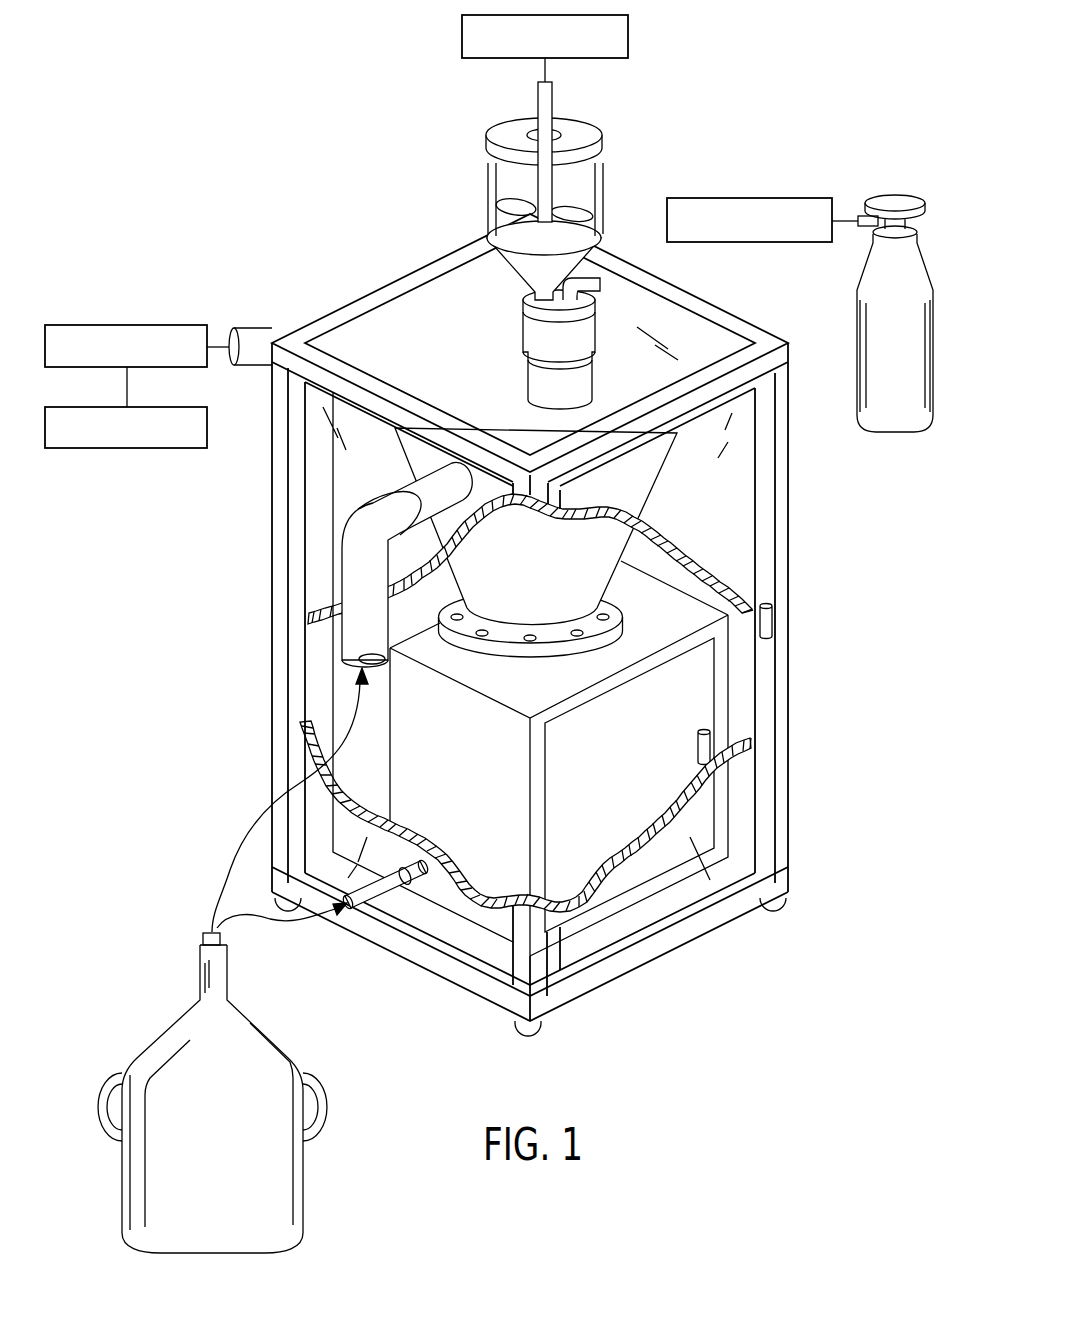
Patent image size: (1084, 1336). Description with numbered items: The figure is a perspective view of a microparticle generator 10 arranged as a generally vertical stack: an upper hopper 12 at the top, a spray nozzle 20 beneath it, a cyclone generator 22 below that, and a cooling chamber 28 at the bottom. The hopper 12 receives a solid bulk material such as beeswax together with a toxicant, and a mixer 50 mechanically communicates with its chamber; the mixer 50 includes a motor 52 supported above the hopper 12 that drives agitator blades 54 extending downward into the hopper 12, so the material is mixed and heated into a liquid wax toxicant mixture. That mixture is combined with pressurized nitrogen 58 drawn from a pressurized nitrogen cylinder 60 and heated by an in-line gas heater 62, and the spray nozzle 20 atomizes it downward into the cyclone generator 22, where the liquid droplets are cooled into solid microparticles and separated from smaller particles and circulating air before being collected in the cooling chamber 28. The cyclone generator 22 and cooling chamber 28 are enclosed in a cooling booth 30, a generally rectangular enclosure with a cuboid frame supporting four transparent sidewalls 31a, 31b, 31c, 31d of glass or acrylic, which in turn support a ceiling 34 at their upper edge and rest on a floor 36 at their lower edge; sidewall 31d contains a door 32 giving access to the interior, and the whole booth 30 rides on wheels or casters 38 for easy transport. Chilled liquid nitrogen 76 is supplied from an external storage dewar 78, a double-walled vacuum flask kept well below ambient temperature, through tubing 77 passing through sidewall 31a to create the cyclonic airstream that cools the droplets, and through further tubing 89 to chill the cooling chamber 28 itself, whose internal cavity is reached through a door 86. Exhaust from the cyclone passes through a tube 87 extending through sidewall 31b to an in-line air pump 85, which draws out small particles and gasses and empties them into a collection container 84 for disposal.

The microparticle generator 10 is at (200, 134).
The upper hopper 12 is at (557, 159).
The spray nozzle 20 is at (611, 296).
The cyclone generator 22 is at (604, 540).
The cooling chamber 28 is at (690, 691).
The cooling booth 30 is at (793, 606).
The transparent sidewall 31a is at (447, 950).
The transparent sidewall 31b is at (260, 540).
The transparent sidewall 31c is at (800, 454).
The transparent sidewall 31d is at (745, 822).
The door 32 is at (765, 645).
The ceiling 34 is at (480, 321).
The floor 36 is at (607, 932).
The wheels or casters 38 is at (775, 905).
The mixer 50 is at (531, 182).
The motor 52 is at (628, 40).
The agitator blades 54 is at (583, 216).
The pressurized nitrogen 58 is at (600, 281).
The pressurized nitrogen cylinder 60 is at (933, 426).
The in-line gas heater 62 is at (772, 198).
The chilled liquid nitrogen 76 is at (231, 862).
The tubing 77 is at (352, 600).
The storage dewar 78 is at (305, 1195).
The collection container 84 is at (167, 407).
The in-line air pump 85 is at (167, 325).
The door 86 is at (705, 725).
The tube 87 is at (262, 330).
The tubing 89 is at (352, 903).